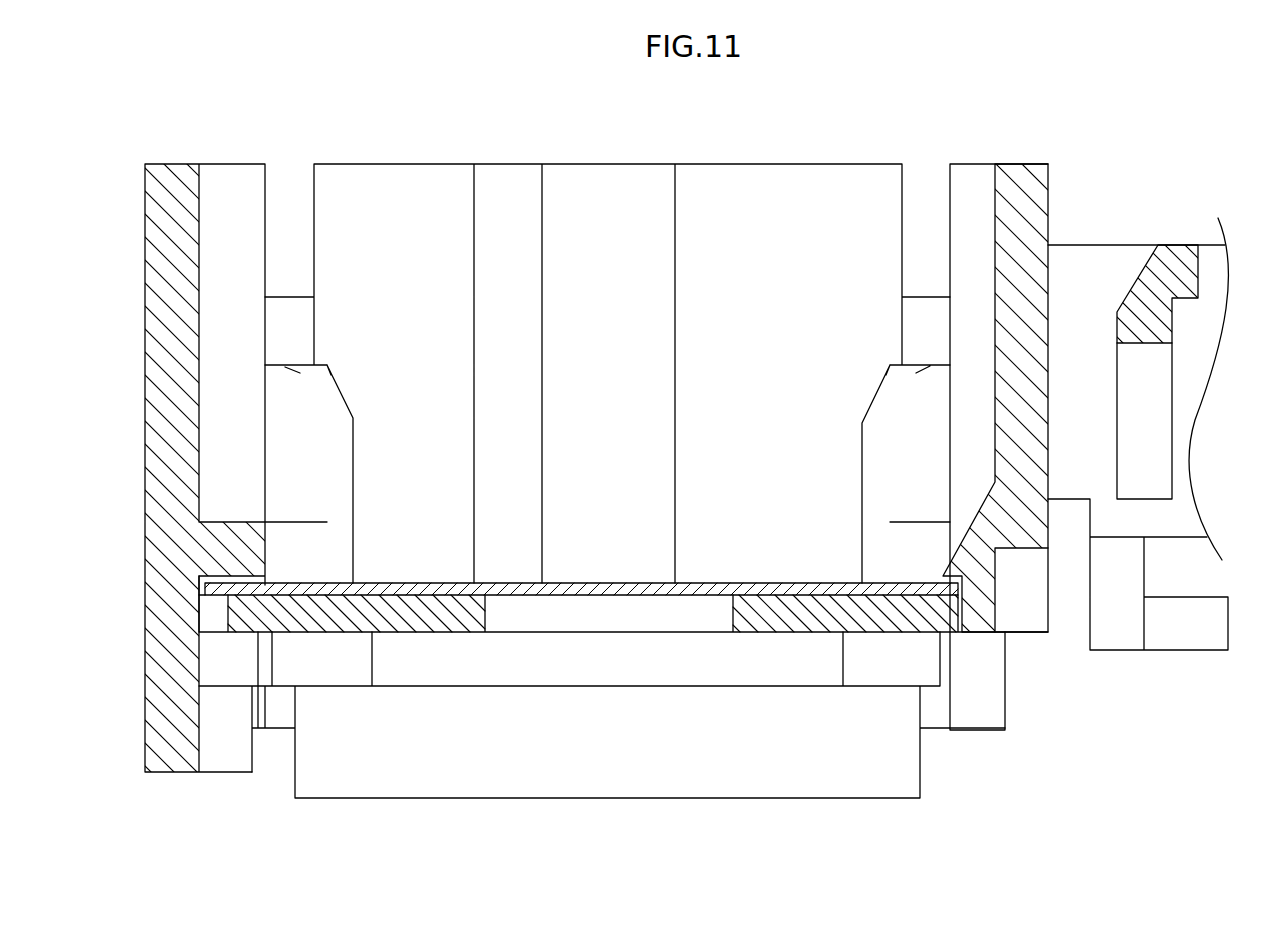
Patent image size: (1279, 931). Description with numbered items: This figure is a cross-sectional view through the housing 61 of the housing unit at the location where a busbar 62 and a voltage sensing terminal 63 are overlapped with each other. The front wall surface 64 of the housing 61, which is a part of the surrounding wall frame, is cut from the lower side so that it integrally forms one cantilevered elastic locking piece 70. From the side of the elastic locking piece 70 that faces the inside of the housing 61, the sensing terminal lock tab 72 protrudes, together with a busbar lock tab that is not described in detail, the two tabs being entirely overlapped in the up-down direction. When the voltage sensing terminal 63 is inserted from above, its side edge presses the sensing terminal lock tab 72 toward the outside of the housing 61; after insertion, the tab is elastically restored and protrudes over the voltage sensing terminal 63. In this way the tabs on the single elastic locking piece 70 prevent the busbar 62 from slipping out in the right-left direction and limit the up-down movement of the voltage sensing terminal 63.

The housing 61 is at (474, 135).
The busbar 62 is at (917, 618).
The voltage sensing terminal 63 is at (878, 592).
The front wall surface 64 is at (968, 188).
The elastic locking piece 70 is at (1024, 405).
The sensing terminal lock tab 72 is at (950, 577).